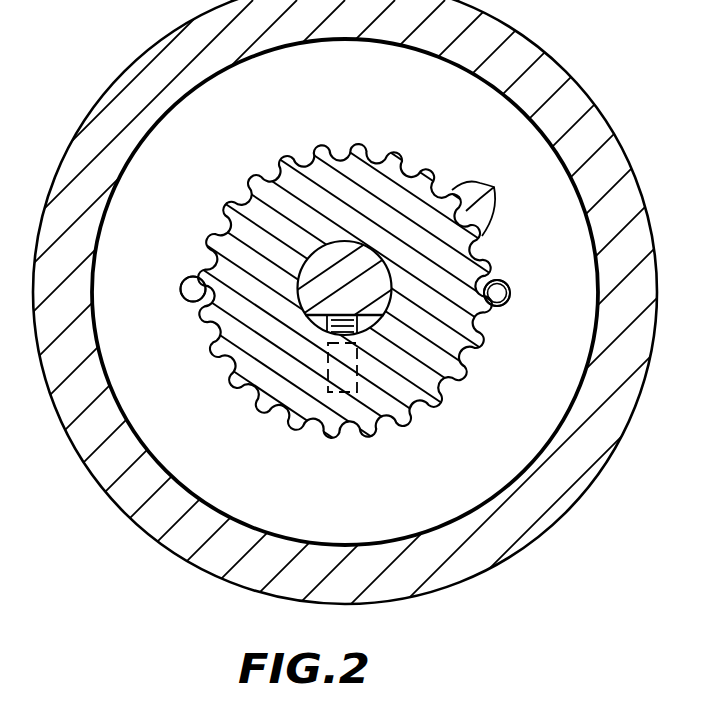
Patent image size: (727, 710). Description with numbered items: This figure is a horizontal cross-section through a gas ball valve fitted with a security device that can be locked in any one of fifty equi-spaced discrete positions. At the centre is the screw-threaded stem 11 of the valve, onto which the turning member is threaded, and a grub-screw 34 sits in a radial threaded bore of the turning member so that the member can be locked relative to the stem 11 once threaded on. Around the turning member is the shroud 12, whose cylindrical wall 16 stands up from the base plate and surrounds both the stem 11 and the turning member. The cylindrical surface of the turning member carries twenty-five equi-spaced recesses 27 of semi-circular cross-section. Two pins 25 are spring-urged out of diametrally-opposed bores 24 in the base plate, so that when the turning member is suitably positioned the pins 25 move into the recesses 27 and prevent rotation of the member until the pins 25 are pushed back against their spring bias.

The screw-threaded stem 11 is at (233, 230).
The shroud 12 is at (116, 536).
The cylindrical wall 16 is at (539, 502).
The bores 24 is at (182, 279).
The pins 25 is at (182, 295).
The recesses 27 is at (486, 194).
The grub-screw 34 is at (362, 351).